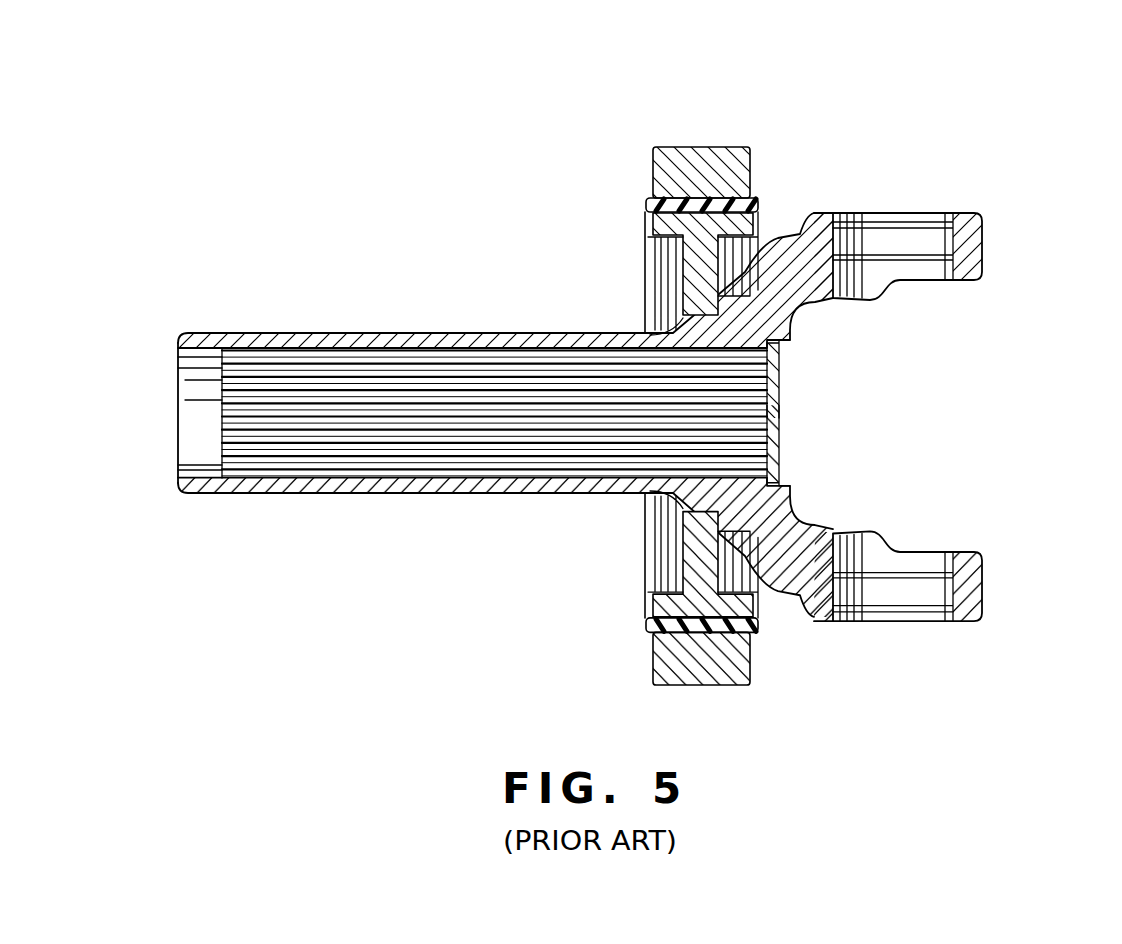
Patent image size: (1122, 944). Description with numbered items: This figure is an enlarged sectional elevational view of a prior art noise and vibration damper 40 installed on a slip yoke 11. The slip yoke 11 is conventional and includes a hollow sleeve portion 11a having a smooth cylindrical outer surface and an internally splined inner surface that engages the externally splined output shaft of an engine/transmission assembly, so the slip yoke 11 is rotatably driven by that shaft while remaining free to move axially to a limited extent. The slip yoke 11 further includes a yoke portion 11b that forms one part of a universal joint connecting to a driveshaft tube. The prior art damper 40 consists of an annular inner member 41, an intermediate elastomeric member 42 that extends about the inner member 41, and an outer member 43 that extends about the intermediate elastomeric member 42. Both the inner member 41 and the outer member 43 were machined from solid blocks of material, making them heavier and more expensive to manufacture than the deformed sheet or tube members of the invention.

The slip yoke 11 is at (450, 313).
The hollow sleeve portion 11a is at (317, 333).
The yoke portion 11b is at (972, 244).
The noise and vibration damper 40 is at (762, 110).
The annular inner member 41 is at (692, 278).
The intermediate elastomeric member 42 is at (652, 207).
The outer member 43 is at (680, 160).